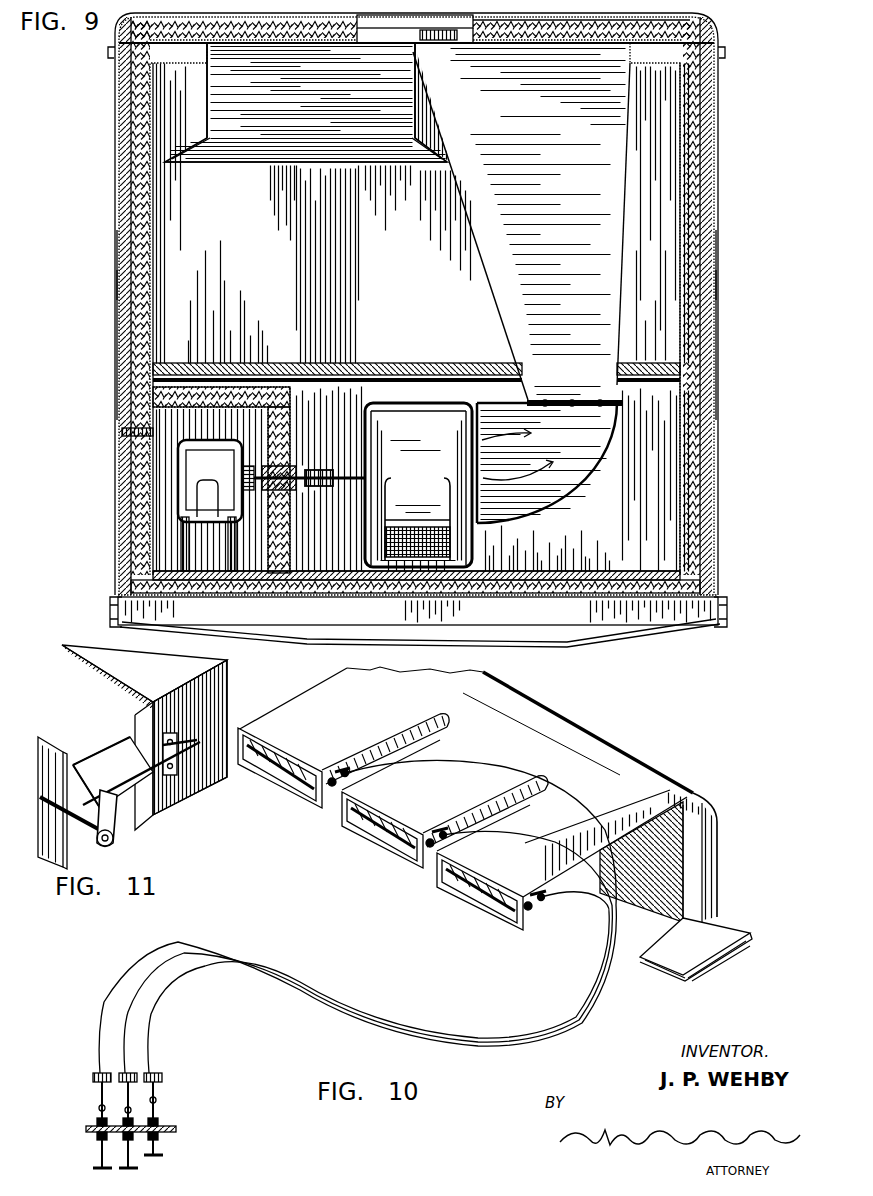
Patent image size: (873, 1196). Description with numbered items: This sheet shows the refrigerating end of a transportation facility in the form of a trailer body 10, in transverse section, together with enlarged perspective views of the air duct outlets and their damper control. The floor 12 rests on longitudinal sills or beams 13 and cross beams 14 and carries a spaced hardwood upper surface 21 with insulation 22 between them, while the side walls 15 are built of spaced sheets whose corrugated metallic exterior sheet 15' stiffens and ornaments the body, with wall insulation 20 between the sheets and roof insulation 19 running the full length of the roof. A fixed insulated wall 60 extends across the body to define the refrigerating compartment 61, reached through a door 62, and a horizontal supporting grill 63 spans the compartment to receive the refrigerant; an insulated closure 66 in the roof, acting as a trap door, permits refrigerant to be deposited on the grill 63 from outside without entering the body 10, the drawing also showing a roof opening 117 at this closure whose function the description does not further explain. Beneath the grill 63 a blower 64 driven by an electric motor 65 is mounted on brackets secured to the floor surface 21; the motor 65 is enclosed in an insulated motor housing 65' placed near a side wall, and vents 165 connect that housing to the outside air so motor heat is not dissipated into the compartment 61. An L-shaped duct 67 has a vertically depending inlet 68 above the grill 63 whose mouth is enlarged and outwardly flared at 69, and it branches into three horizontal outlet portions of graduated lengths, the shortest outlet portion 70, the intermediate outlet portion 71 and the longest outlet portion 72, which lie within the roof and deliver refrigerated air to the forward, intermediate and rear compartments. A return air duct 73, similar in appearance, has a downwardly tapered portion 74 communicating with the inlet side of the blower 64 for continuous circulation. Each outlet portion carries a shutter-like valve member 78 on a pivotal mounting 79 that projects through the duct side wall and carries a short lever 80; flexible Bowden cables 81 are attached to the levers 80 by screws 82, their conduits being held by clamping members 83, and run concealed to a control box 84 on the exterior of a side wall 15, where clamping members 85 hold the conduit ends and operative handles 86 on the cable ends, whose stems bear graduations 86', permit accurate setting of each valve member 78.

In FIG. 9, the trailer body 10 is at (720, 108).
In FIG. 9, the floor 12 is at (335, 597).
In FIG. 9, the sills or beams 13 is at (110, 612).
In FIG. 9, the cross beams 14 is at (571, 647).
In FIG. 9, the side walls 15 is at (416, 345).
In FIG. 9, the corrugated exterior sheet 15' is at (420, 265).
In FIG. 9, the roof insulation 19 is at (528, 26).
In FIG. 9, the wall insulation 20 is at (138, 490).
In FIG. 9, the upper floor surface 21 is at (256, 578).
In FIG. 9, the floor insulation 22 is at (406, 597).
In FIG. 9, the fixed insulated wall 60 is at (340, 304).
In FIG. 9, the refrigerating compartment 61 is at (249, 299).
In FIG. 9, the door 62 is at (356, 276).
In FIG. 9, the supporting grill 63 is at (278, 375).
In FIG. 9, the blower 64 is at (365, 435).
In FIG. 9, the electric motor 65 is at (260, 479).
In FIG. 9, the insulated motor housing 65' is at (238, 480).
In FIG. 9, the insulated closure 66 is at (438, 28).
In FIG. 9, the L-shaped duct 67 is at (245, 62).
In FIG. 10, the L-shaped duct 67 is at (663, 775).
In FIG. 9, the duct inlet 68 is at (217, 108).
In FIG. 10, the duct inlet 68 is at (718, 833).
In FIG. 9, the flared mouth 69 is at (247, 162).
In FIG. 10, the flared mouth 69 is at (704, 970).
In FIG. 10, the shortest outlet portion 70 is at (268, 714).
In FIG. 10, the intermediate outlet portion 71 is at (343, 798).
In FIG. 10, the longest outlet portion 72 is at (437, 860).
In FIG. 9, the return air duct 73 is at (595, 68).
In FIG. 9, the tapered return portion 74 is at (618, 226).
In FIG. 10, the valve member 78 is at (270, 778).
In FIG. 11, the valve member 78 is at (57, 748).
In FIG. 10, the pivotal mounting 79 is at (330, 778).
In FIG. 11, the pivotal mounting 79 is at (113, 840).
In FIG. 10, the lever 80 is at (345, 768).
In FIG. 11, the lever 80 is at (110, 822).
In FIG. 10, the flexible cables 81 is at (603, 996).
In FIG. 11, the screws 82 is at (113, 792).
In FIG. 10, the clamping members 83 is at (440, 830).
In FIG. 11, the clamping members 83 is at (176, 732).
In FIG. 10, the control box 84 is at (172, 1126).
In FIG. 10, the clamping members 85 is at (93, 1078).
In FIG. 10, the operative handles 86 is at (122, 1157).
In FIG. 10, the graduations 86' is at (126, 1131).
In FIG. 9, the top opening 117 is at (330, 22).
In FIG. 9, the motor compartment vents 165 is at (122, 433).